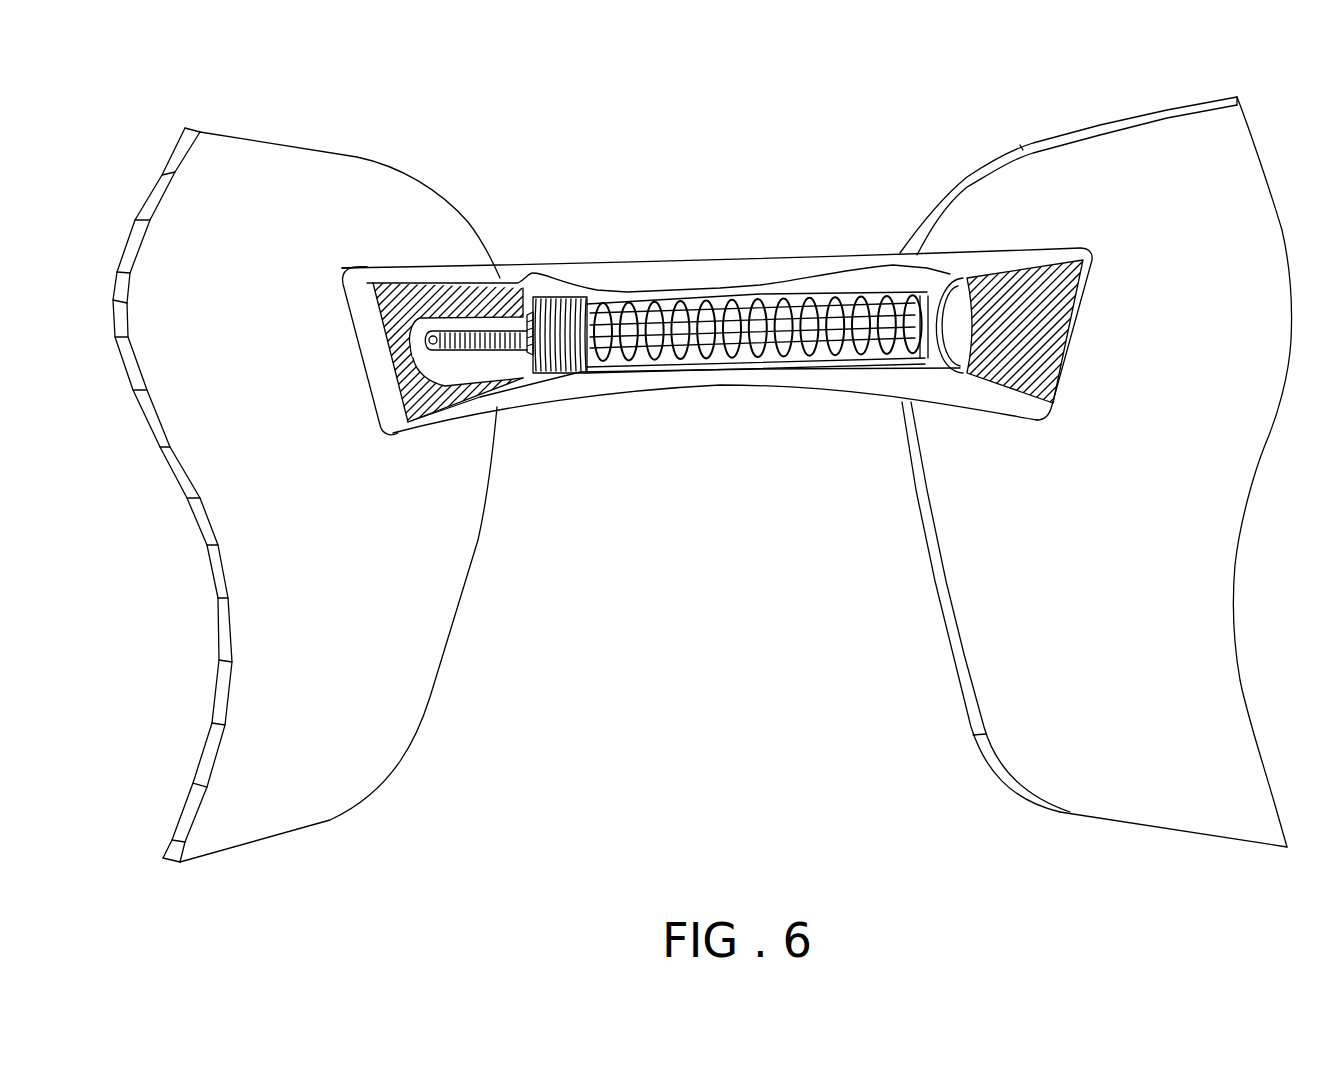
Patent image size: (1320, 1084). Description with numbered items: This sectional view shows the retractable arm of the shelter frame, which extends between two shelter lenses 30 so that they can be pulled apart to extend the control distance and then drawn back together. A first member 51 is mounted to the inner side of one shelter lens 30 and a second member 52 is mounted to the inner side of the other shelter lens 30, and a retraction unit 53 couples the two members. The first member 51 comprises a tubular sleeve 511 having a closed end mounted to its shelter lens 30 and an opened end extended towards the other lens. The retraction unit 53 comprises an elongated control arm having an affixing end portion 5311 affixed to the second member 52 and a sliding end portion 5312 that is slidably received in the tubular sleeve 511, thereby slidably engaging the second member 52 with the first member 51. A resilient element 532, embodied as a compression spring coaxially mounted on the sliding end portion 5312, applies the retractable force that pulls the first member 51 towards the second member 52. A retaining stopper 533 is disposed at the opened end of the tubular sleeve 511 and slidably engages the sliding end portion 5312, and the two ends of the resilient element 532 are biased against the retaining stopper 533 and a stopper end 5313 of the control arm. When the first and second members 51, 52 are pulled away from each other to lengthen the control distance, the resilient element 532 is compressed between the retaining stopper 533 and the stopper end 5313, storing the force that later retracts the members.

The shelter lens 30 is at (347, 693).
The first member 51 is at (843, 407).
The tubular sleeve 511 is at (720, 283).
The second member 52 is at (408, 427).
The retraction unit 53 is at (831, 346).
The affixing end portion 5311 is at (485, 332).
The sliding end portion 5312 is at (637, 303).
The stopper end 5313 is at (940, 293).
The resilient element 532 is at (713, 365).
The retaining stopper 533 is at (590, 375).